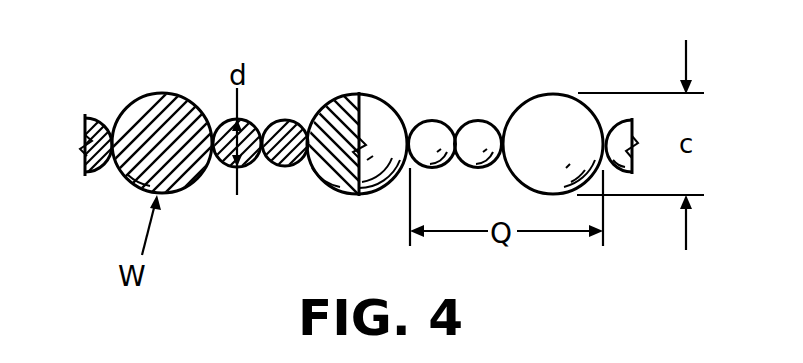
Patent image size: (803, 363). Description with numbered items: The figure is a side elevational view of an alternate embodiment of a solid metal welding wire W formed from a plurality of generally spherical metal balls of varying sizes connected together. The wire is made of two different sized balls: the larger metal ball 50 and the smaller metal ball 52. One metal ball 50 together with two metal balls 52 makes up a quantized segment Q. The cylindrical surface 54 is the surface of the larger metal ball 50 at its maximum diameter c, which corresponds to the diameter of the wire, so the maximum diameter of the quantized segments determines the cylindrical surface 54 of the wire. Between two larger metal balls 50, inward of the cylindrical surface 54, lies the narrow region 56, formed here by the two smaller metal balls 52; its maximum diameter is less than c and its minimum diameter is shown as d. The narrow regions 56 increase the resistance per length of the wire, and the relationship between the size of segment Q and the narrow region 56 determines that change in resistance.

The metal ball 50 is at (371, 107).
The metal ball 52 is at (478, 121).
The cylindrical surface 54 is at (152, 93).
The narrow region 56 is at (258, 124).